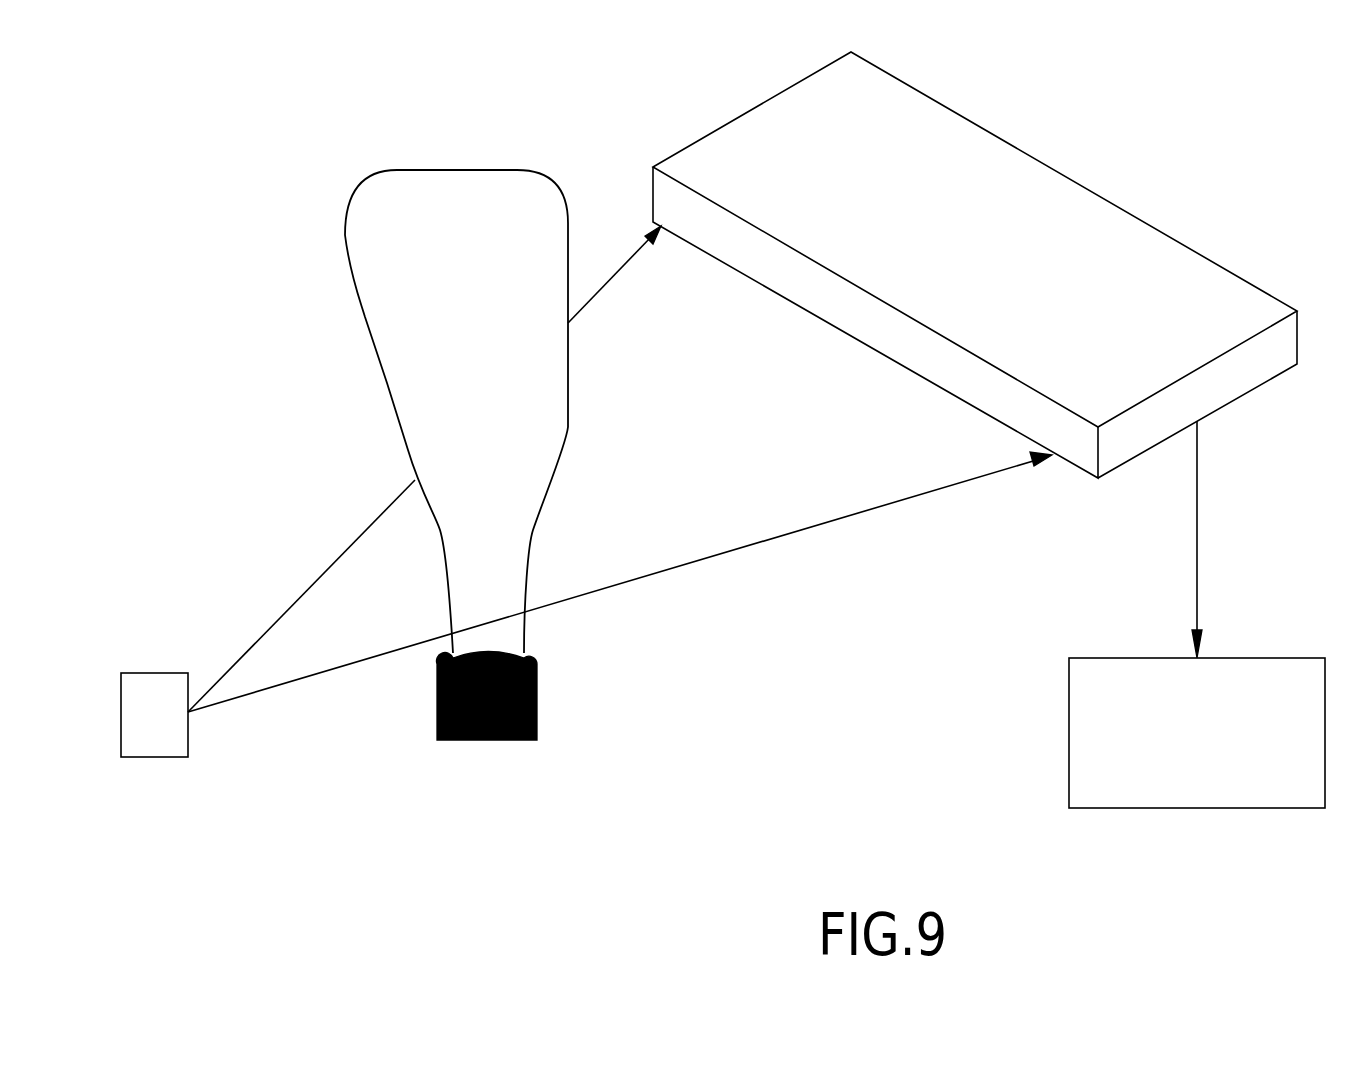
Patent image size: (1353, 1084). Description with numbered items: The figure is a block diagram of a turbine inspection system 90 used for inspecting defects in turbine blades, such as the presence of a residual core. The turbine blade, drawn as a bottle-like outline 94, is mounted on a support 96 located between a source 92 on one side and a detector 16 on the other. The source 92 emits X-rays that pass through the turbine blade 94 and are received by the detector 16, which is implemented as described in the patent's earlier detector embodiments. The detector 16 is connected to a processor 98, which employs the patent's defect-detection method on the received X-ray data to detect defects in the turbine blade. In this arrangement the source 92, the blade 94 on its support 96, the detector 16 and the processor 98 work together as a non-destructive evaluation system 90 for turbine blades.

The turbine inspection system 90 is at (1110, 111).
The detector 16 is at (975, 265).
The source 92 is at (160, 723).
The bottle 94 is at (565, 437).
The support 96 is at (537, 740).
The processor 98 is at (1197, 614).